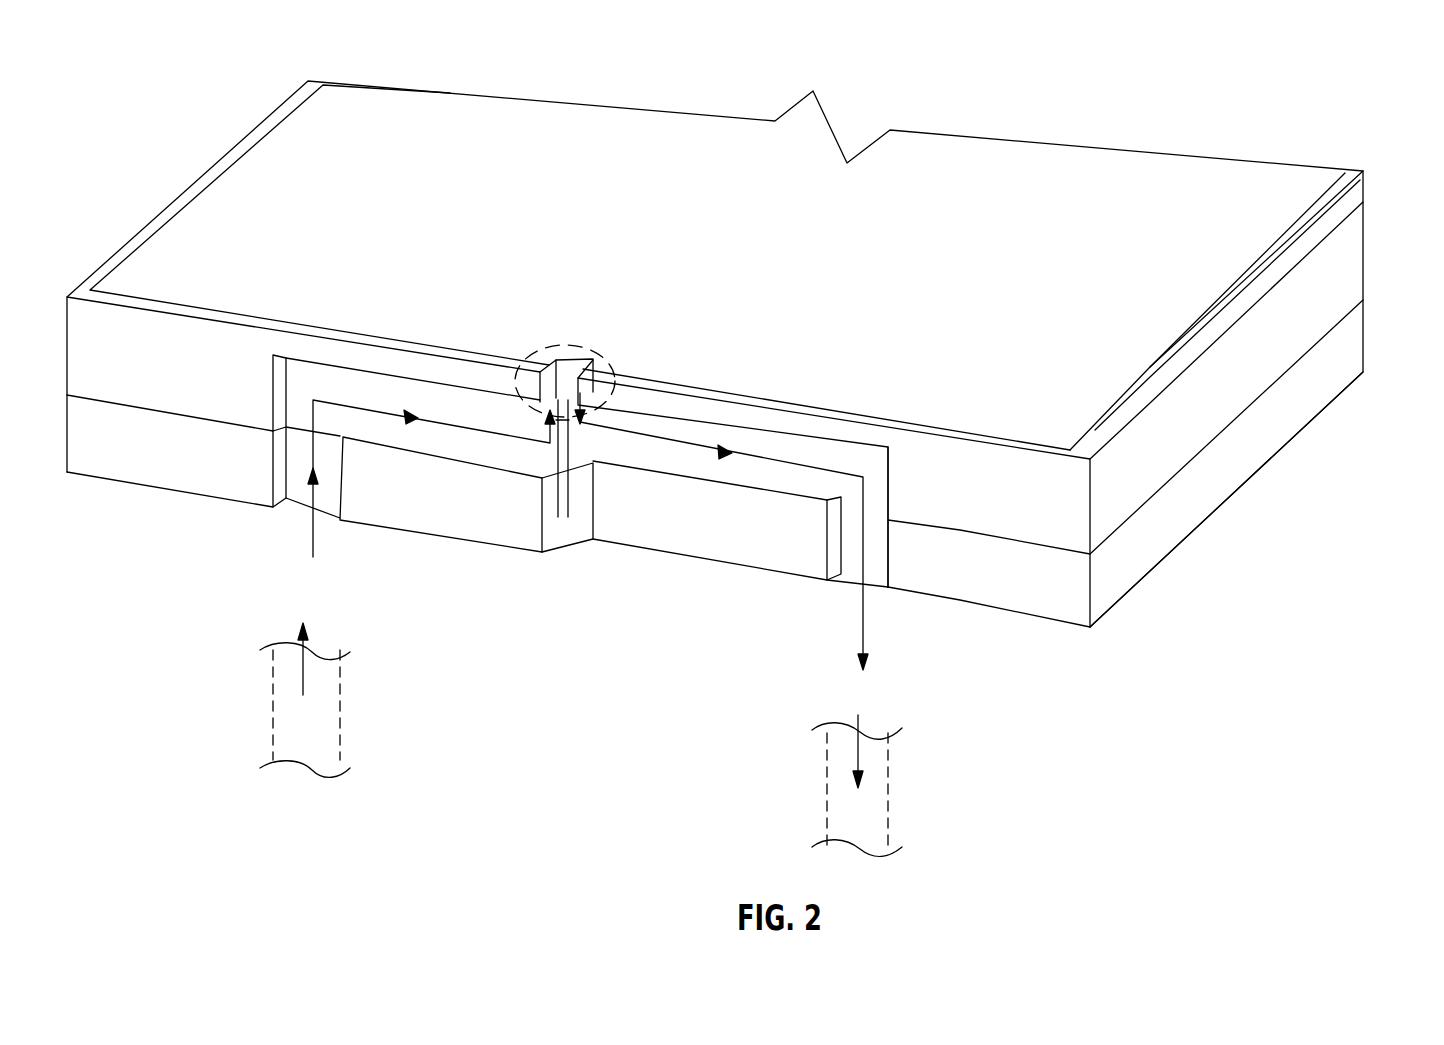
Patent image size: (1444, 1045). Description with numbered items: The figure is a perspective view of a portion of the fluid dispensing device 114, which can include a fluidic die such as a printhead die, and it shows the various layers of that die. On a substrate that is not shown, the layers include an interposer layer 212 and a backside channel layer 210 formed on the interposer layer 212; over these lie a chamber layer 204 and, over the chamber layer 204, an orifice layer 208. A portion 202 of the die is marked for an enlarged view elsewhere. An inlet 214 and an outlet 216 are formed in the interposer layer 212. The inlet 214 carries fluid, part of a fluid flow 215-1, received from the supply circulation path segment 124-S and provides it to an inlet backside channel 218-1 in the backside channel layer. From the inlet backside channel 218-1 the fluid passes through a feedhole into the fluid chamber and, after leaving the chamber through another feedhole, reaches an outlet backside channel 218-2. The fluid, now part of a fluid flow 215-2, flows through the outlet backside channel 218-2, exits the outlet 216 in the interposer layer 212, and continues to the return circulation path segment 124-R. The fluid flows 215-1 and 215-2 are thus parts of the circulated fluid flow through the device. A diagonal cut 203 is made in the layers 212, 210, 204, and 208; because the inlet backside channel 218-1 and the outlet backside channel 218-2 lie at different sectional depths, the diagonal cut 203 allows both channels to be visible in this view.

The fluid dispensing device 114 is at (1217, 77).
The portion of the fluidic die 202 is at (567, 347).
The diagonal cut 203 is at (593, 563).
The chamber layer 204 is at (1237, 293).
The orifice layer 208 is at (1247, 270).
The backside channel layer 210 is at (1350, 258).
The interposer layer 212 is at (1350, 348).
The inlet 214 is at (302, 488).
The fluid flow 215-1 is at (313, 538).
The fluid flow 215-2 is at (867, 640).
The outlet 216 is at (853, 570).
The inlet backside channel 218-1 is at (513, 453).
The outlet backside channel 218-2 is at (755, 467).
The supply circulation path segment 124-S is at (285, 712).
The return circulation path segment 124-R is at (872, 787).